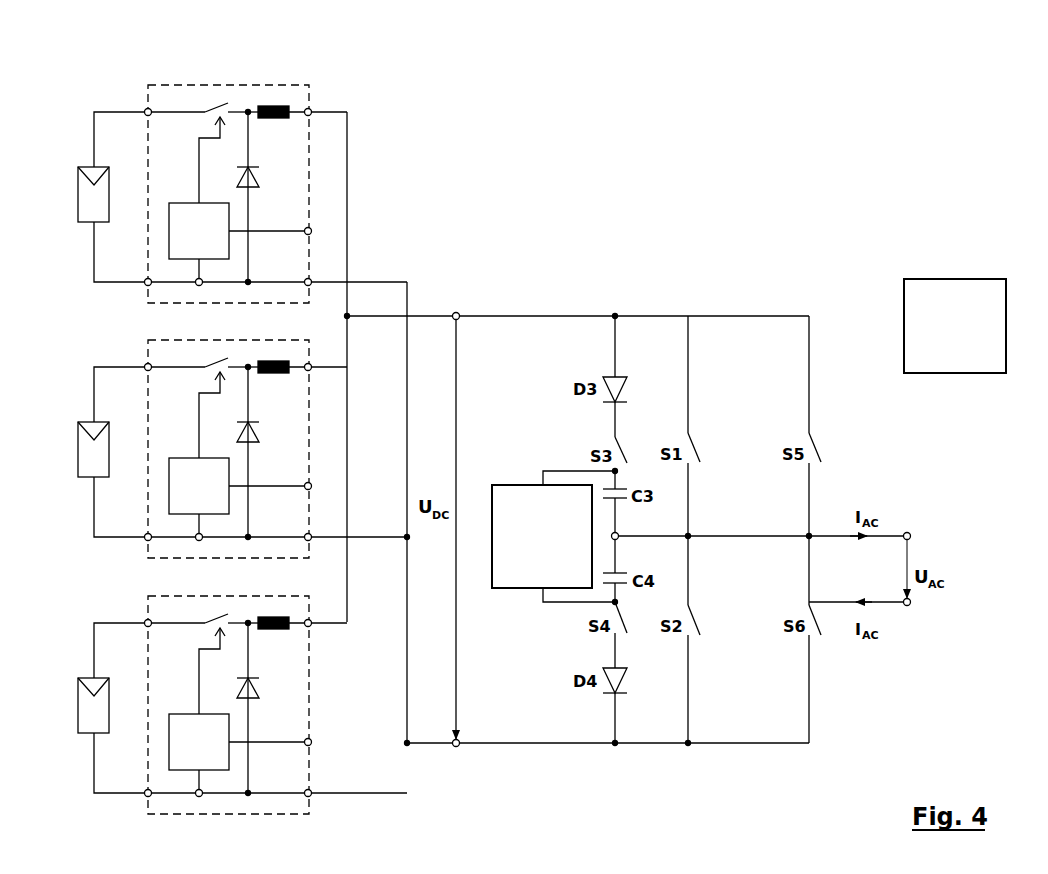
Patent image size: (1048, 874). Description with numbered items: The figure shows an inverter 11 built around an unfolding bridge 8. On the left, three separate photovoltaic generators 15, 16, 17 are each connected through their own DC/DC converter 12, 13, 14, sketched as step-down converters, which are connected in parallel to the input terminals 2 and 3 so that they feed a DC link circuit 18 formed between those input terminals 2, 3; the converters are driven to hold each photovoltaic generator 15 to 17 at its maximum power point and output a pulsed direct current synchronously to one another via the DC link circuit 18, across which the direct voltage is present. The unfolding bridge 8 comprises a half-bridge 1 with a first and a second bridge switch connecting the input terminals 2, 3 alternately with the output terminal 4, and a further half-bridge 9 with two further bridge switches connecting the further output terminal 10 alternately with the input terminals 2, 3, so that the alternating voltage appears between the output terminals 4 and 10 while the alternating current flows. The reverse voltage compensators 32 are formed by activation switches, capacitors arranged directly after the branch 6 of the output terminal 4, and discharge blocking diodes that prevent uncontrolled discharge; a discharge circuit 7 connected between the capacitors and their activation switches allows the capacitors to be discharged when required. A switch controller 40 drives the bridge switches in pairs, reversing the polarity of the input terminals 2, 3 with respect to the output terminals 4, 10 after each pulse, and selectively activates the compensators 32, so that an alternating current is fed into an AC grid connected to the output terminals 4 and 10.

The half-bridge 1 is at (655, 288).
The input terminal 2 is at (458, 312).
The input terminal 3 is at (460, 749).
The output terminal 4 is at (911, 533).
The branch 6 is at (622, 541).
The discharge circuit 7 is at (506, 483).
The unfolding bridge 8 is at (784, 251).
The further half-bridge 9 is at (809, 751).
The further output terminal 10 is at (911, 605).
The inverter 11 is at (854, 269).
The DC/DC converter 12 is at (327, 78).
The DC/DC converter 13 is at (318, 330).
The DC/DC converter 14 is at (317, 811).
The photovoltaic generator 15 is at (72, 167).
The photovoltaic generator 16 is at (72, 422).
The photovoltaic generator 17 is at (72, 677).
The DC link circuit 18 is at (448, 749).
The reverse voltage compensator 32 is at (668, 589).
The switch controller 40 is at (968, 278).